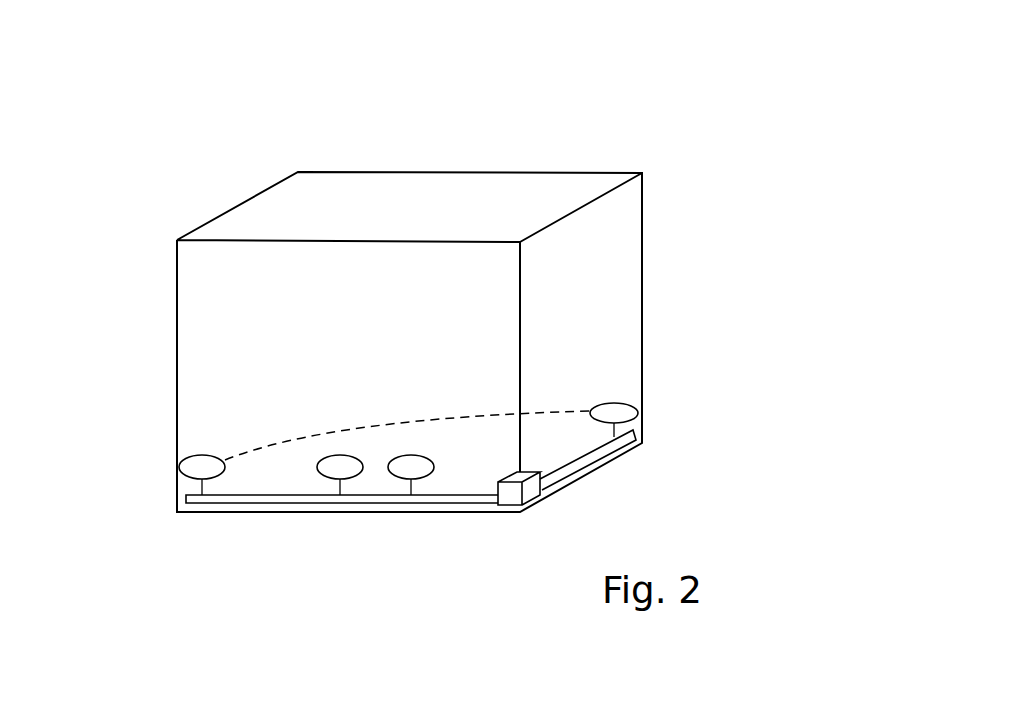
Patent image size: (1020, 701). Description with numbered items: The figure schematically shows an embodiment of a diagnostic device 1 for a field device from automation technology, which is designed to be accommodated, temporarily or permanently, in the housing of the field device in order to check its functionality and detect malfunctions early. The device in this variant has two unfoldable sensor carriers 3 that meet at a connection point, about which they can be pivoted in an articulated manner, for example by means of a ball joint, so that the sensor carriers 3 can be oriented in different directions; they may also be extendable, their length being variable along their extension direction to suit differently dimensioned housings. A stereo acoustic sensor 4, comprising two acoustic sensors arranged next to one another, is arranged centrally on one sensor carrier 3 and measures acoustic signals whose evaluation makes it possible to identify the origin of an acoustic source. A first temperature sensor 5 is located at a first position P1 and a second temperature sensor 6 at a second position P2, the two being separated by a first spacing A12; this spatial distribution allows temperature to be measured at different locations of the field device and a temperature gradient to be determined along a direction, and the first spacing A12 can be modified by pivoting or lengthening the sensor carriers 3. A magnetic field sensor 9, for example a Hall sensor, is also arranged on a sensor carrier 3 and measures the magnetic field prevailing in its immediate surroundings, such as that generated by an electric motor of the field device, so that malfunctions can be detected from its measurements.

The diagnostic device 1 is at (413, 123).
The sensor carrier 3 is at (261, 497).
The stereo acoustic sensor 4 is at (333, 470).
The first temperature sensor 5 is at (192, 472).
The second temperature sensor 6 is at (624, 412).
The magnetic field sensor 9 is at (404, 470).
The first spacing A12 is at (373, 424).
The first position P1 is at (147, 534).
The second position P2 is at (668, 413).